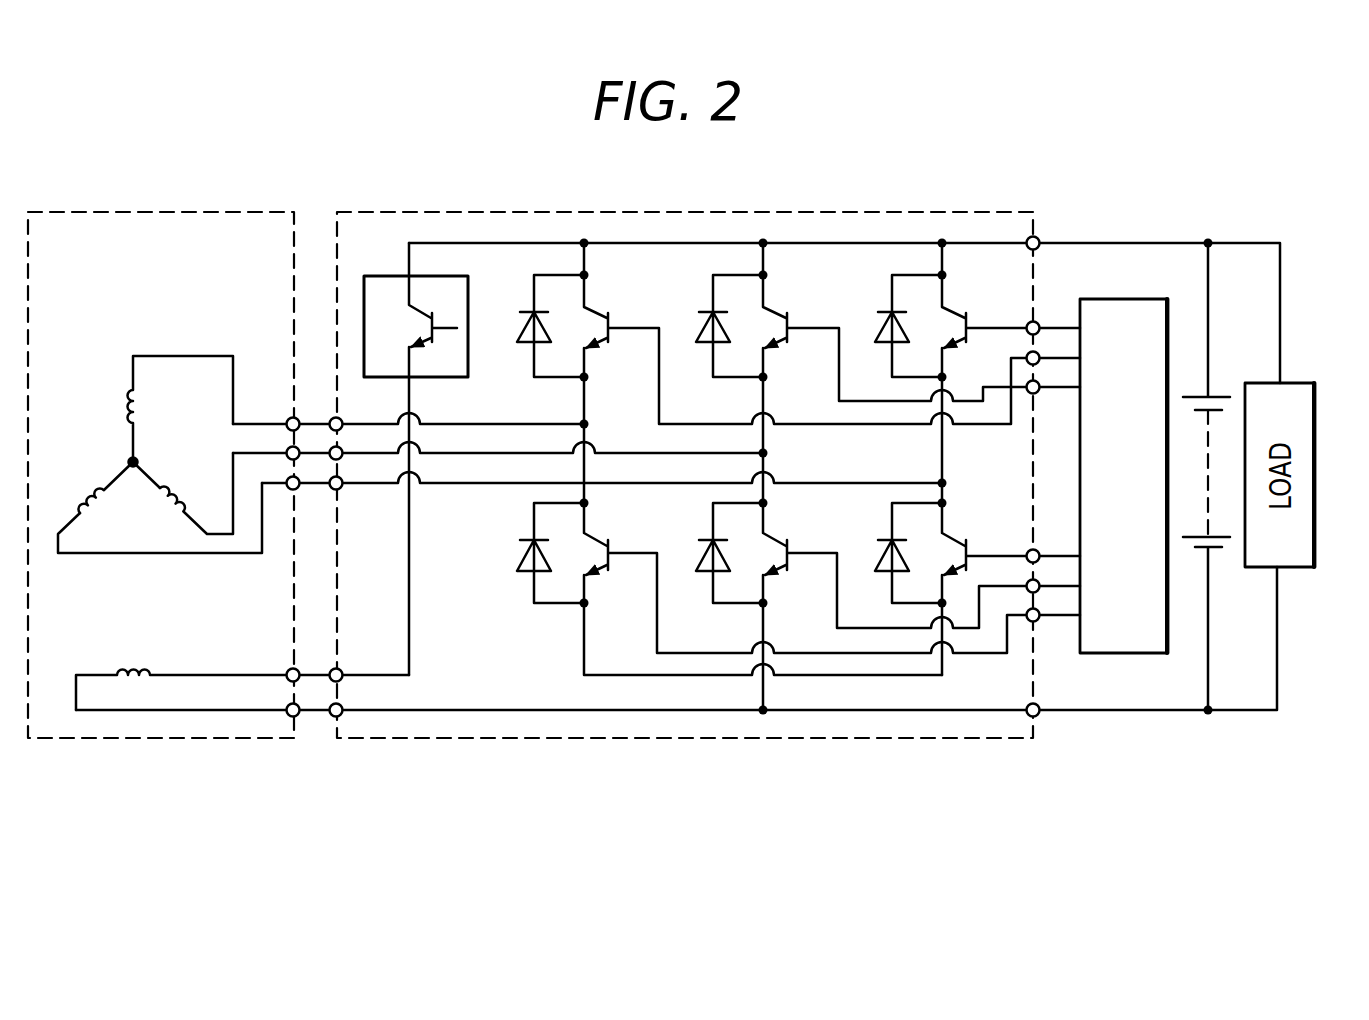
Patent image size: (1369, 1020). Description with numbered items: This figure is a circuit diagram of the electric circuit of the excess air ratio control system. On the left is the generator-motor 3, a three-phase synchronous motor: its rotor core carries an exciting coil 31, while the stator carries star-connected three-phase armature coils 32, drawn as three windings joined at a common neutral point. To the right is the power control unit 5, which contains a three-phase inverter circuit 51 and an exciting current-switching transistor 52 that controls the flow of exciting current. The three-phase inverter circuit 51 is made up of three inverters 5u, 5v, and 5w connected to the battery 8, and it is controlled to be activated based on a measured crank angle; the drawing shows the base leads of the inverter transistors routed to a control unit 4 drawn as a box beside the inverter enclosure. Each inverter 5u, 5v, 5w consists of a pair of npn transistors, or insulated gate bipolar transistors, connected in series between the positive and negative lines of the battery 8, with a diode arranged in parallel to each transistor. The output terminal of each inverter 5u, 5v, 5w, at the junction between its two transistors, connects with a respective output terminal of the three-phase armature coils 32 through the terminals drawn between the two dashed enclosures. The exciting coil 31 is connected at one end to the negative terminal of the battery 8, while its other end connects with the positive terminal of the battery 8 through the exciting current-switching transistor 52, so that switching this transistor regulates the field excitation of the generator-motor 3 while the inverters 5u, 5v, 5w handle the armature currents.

The generator-motor 3 is at (198, 738).
The exciting coil 31 is at (110, 712).
The three-phase armature coils 32 is at (120, 417).
The control unit 4 is at (1138, 299).
The power control unit 5 is at (960, 738).
The three-phase inverter circuit 51 is at (866, 719).
The exciting current-switching transistor 52 is at (381, 276).
The inverter 5u is at (603, 279).
The inverter 5v is at (782, 281).
The inverter 5w is at (958, 286).
The battery 8 is at (1208, 670).